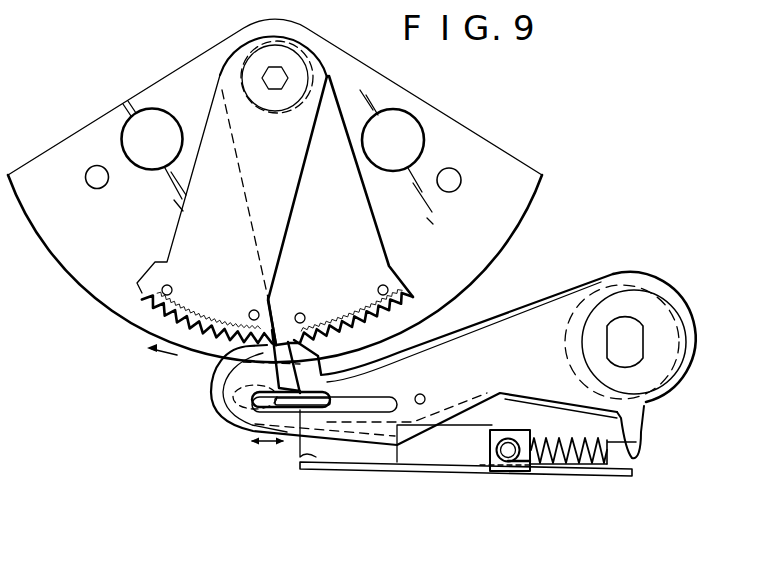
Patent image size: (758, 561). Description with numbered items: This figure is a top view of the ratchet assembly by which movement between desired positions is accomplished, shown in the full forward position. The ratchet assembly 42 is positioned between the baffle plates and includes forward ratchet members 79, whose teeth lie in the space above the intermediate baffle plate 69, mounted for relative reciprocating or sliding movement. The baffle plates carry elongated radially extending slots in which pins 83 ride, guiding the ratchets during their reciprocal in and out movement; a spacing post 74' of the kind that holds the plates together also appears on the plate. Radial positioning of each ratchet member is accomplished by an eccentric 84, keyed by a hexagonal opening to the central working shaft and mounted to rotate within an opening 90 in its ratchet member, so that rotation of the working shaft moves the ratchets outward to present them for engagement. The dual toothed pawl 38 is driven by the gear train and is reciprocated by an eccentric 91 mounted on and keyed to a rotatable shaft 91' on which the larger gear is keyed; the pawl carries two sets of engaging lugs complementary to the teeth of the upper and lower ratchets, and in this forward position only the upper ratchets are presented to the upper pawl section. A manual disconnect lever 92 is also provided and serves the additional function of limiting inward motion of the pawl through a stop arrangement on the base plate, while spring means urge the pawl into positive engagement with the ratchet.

The dual toothed pawl 38 is at (503, 353).
The ratchet assembly 42 is at (398, 263).
The intermediate baffle plate 69 is at (115, 297).
The guide pin hole 74' is at (492, 171).
The forward ratchet members 79 is at (254, 267).
The pins 83 is at (251, 311).
The eccentric 84 is at (296, 87).
The opening 90 is at (243, 88).
The eccentric 91 is at (646, 334).
The rotatable shaft 91' is at (625, 342).
The manual disconnect lever 92 is at (300, 458).